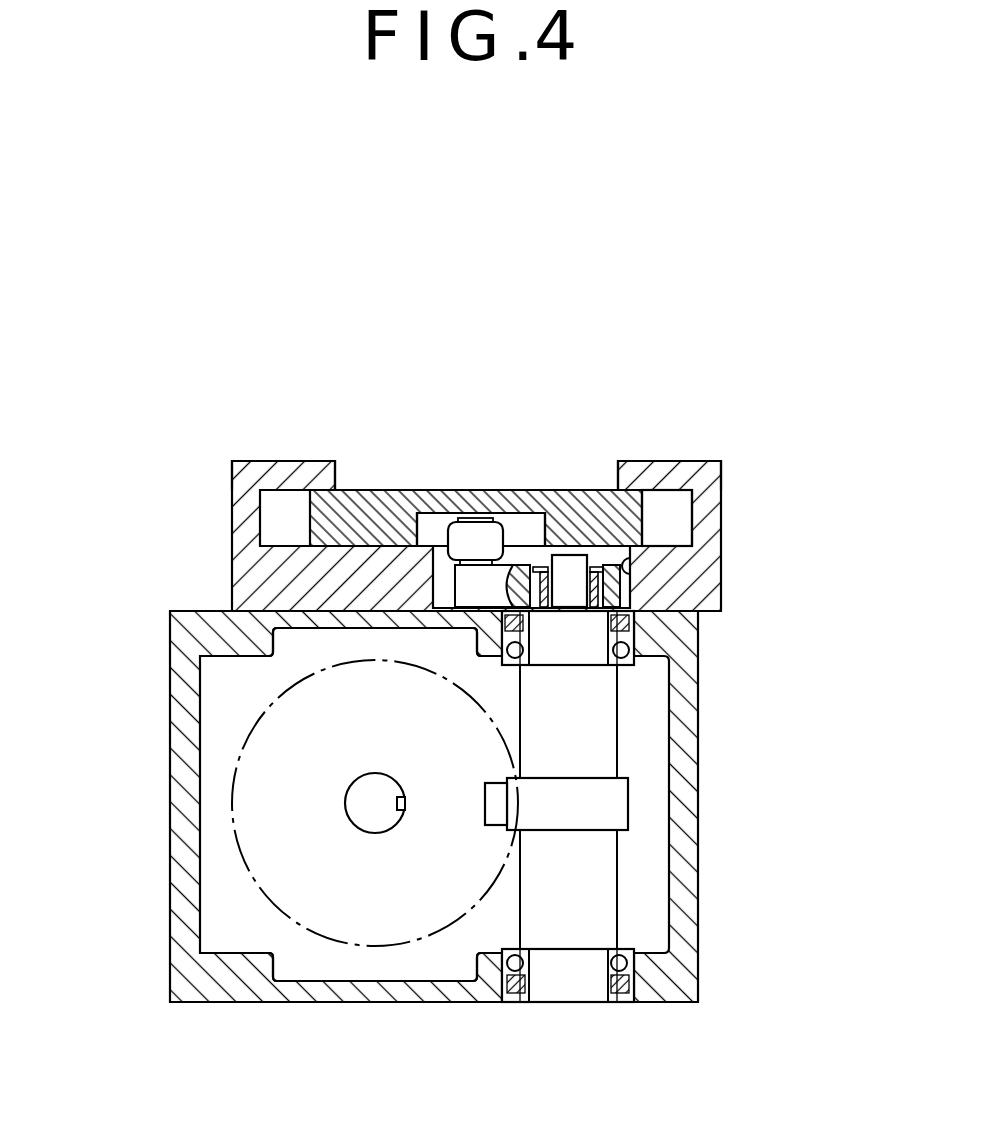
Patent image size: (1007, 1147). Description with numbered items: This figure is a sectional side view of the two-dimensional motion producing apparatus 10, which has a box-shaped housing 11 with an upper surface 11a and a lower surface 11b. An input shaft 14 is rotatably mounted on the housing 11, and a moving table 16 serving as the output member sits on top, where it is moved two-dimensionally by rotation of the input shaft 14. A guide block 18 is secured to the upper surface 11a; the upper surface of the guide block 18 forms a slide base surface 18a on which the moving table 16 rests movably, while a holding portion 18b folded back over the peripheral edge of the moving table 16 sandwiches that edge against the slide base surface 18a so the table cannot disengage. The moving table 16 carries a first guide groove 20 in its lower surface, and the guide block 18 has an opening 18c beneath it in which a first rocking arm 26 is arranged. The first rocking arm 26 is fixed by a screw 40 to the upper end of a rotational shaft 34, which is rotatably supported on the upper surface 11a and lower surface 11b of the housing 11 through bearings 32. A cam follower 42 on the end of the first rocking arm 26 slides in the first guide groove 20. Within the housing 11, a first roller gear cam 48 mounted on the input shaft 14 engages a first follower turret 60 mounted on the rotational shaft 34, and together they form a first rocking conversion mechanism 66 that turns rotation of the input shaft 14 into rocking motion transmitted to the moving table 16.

The two-dimensional motion producing apparatus 10 is at (176, 492).
The housing 11 is at (170, 737).
The upper surface of the housing 11a is at (325, 628).
The lower surface of the housing 11b is at (344, 982).
The input shaft 14 is at (367, 812).
The moving table 16 is at (358, 490).
The guide block 18 is at (240, 582).
The slide base surface 18a is at (665, 545).
The holding portion 18b is at (283, 460).
The opening 18c is at (632, 573).
The first guide groove 20 is at (428, 490).
The first rocking arm 26 is at (508, 570).
The bearings 32 is at (622, 658).
The rotational shaft 34 is at (648, 910).
The screw 40 is at (543, 560).
The cam follower 42 is at (497, 512).
The first roller gear cam 48 is at (328, 915).
The first follower turret 60 is at (613, 810).
The first rocking conversion mechanism 66 is at (480, 842).